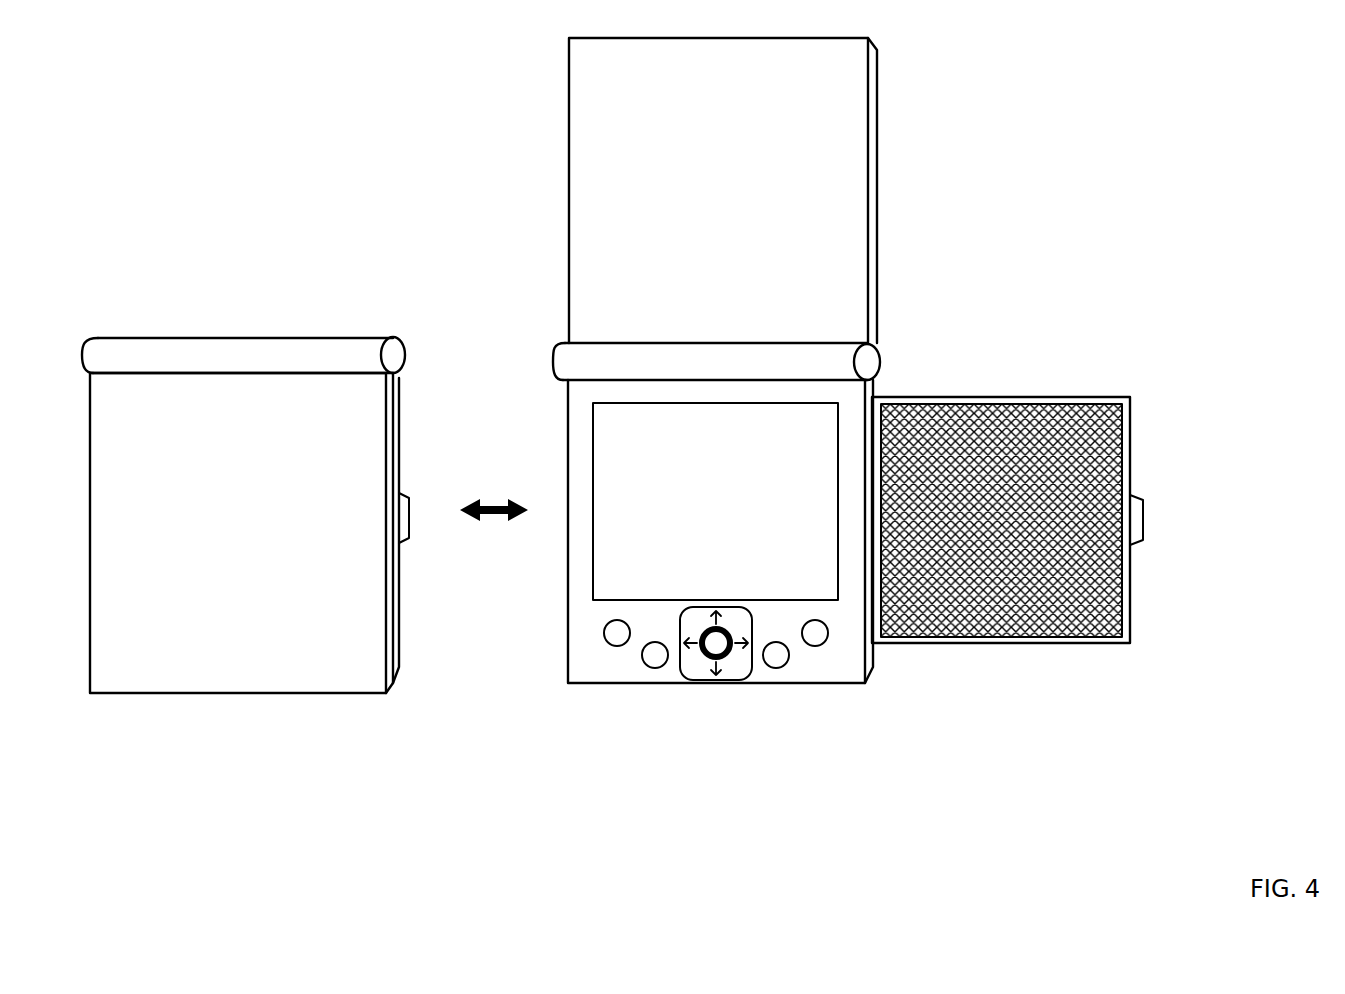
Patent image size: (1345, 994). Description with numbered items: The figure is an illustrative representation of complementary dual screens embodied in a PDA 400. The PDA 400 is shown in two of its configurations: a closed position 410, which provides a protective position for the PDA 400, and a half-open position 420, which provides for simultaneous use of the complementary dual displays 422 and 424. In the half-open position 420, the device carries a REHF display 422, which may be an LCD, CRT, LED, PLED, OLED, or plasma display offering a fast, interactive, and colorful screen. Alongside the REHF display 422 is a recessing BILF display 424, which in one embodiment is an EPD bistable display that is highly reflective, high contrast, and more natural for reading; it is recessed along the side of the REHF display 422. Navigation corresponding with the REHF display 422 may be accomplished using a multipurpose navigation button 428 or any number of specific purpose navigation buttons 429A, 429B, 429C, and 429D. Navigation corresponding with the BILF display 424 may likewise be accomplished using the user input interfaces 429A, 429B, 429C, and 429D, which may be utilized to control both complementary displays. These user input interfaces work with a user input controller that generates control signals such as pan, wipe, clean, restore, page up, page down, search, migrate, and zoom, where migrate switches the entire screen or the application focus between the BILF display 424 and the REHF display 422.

The PDA 400 is at (399, 271).
The closed position 410 is at (245, 594).
The half-open position 420 is at (817, 444).
The REHF display 422 is at (697, 500).
The BILF display 424 is at (981, 508).
The multipurpose navigation button 428 is at (746, 677).
The specific purpose navigation button 429A is at (603, 633).
The specific purpose navigation button 429B is at (644, 661).
The specific purpose navigation button 429C is at (787, 661).
The specific purpose navigation button 429D is at (826, 640).